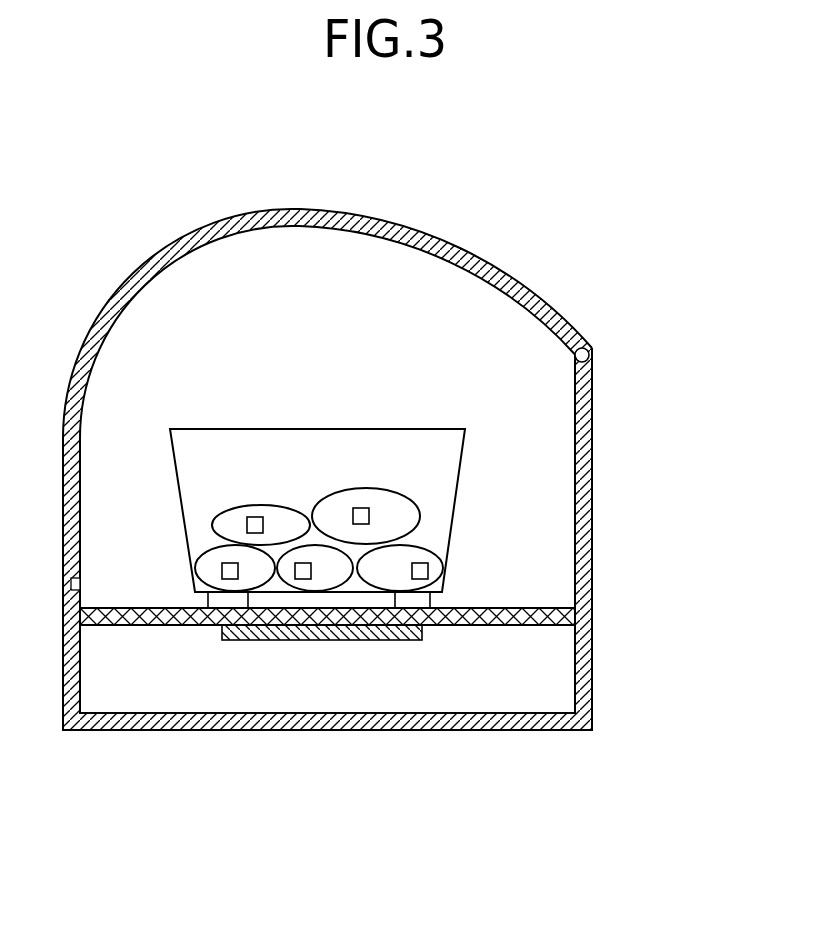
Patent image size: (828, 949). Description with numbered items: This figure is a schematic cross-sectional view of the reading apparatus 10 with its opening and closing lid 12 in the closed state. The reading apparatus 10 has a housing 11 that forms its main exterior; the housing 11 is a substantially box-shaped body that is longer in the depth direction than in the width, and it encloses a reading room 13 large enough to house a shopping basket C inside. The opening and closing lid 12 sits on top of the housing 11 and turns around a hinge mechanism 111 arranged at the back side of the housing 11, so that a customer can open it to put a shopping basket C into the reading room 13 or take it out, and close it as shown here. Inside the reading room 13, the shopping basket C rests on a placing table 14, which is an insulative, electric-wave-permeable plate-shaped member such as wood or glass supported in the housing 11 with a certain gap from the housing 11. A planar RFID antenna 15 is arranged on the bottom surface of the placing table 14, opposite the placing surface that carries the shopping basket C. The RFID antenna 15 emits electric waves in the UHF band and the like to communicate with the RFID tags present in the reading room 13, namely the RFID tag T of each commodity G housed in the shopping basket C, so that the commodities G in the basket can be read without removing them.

The reading apparatus 10 is at (376, 472).
The housing 11 is at (592, 683).
The opening and closing lid 12 is at (287, 210).
The hinge mechanism 111 is at (590, 354).
The reading room 13 is at (528, 522).
The placing table 14 is at (135, 626).
The RFID antenna 15 is at (240, 641).
The shopping basket C is at (450, 462).
The commodity G is at (272, 504).
The RFID tag T is at (366, 507).